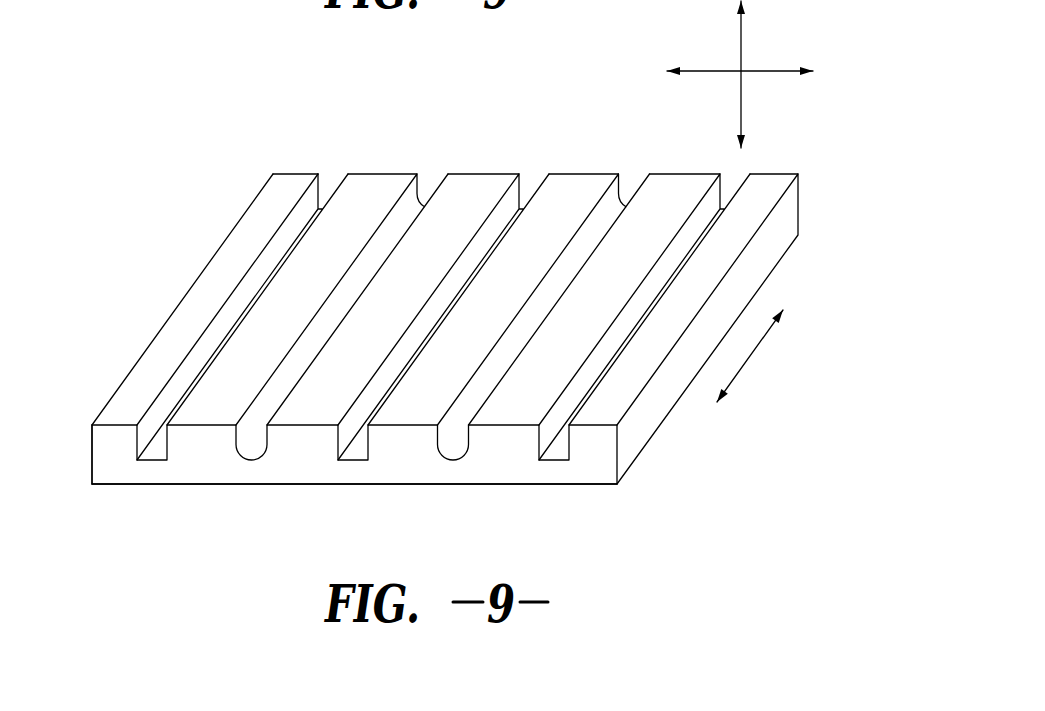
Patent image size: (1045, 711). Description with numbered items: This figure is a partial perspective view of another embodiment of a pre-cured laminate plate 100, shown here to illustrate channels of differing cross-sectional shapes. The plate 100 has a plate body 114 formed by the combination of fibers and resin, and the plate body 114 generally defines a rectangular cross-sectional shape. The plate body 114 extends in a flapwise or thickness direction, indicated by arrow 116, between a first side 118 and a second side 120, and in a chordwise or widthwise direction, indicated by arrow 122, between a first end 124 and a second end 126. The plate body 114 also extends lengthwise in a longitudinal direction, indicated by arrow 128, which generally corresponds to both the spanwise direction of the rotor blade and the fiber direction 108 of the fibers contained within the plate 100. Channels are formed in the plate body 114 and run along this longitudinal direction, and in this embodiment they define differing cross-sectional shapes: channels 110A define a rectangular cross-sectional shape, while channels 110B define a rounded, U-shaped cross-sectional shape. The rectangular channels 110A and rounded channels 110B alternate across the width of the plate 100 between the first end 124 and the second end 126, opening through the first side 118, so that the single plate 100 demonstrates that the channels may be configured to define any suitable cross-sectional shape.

The plate 100 is at (415, 331).
The fiber direction 108 is at (779, 377).
The arrow indicating longitudinal direction 128 is at (742, 367).
The channels defining a rectangular cross-sectional shape 110A is at (147, 431).
The channels defining a rounded cross-sectional shape 110B is at (254, 431).
The plate body 114 is at (195, 314).
The arrow indicating flapwise or thickness direction 116 is at (743, 45).
The first side 118 is at (148, 363).
The second side 120 is at (182, 487).
The arrow indicating chordwise or widthwise direction 122 is at (715, 69).
The first end 124 is at (90, 460).
The second end 126 is at (645, 420).